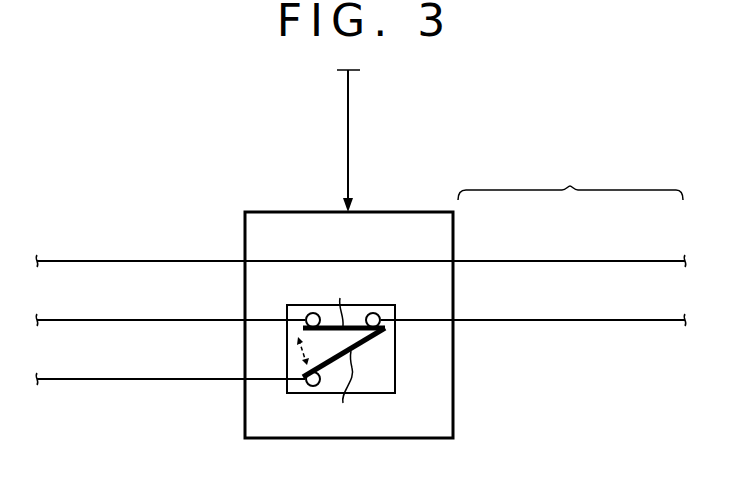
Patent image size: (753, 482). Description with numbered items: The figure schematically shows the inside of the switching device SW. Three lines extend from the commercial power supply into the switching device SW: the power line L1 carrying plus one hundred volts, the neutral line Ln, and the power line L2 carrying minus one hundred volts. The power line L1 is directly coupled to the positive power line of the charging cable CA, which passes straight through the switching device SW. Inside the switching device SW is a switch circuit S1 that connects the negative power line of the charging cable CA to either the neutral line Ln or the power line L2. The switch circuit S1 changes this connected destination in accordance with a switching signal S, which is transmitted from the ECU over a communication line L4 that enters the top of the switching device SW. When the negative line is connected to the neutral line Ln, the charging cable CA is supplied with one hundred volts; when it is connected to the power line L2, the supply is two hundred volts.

The switching device SW is at (387, 438).
The switch circuit S1 is at (395, 353).
The power line L1 is at (157, 258).
The power line L2 is at (157, 376).
The neutral line Ln is at (157, 317).
The communication line L4 is at (350, 131).
The switching signal S is at (363, 176).
The charging cable CA is at (570, 179).